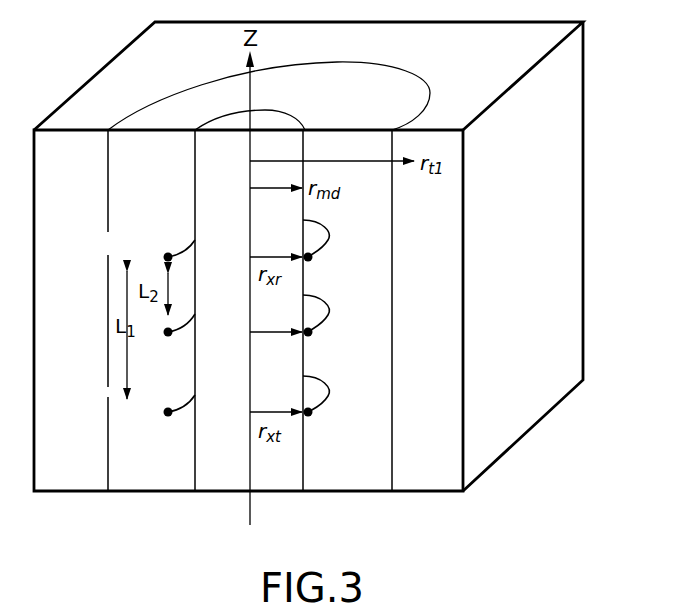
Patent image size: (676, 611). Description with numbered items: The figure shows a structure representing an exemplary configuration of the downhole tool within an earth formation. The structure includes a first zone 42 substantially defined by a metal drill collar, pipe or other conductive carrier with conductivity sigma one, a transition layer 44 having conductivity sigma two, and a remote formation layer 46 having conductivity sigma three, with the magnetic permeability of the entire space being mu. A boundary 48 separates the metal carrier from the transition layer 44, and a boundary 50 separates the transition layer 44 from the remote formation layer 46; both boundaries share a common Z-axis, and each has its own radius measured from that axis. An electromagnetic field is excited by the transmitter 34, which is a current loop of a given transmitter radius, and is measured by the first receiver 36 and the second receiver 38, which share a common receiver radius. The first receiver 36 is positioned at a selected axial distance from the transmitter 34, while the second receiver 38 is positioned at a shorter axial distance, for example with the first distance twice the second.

The transmitter 34 is at (328, 240).
The first receiver 36 is at (328, 396).
The second receiver 38 is at (328, 315).
The first zone 42 is at (275, 492).
The transition layer 44 is at (348, 492).
The remote formation layer 46 is at (428, 492).
The boundary 48 is at (303, 121).
The boundary 50 is at (367, 63).